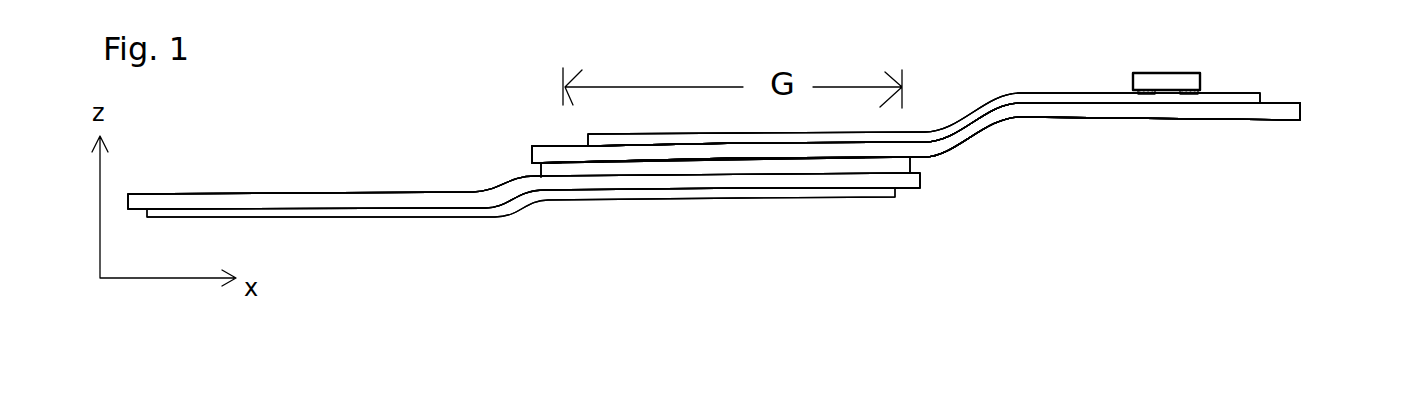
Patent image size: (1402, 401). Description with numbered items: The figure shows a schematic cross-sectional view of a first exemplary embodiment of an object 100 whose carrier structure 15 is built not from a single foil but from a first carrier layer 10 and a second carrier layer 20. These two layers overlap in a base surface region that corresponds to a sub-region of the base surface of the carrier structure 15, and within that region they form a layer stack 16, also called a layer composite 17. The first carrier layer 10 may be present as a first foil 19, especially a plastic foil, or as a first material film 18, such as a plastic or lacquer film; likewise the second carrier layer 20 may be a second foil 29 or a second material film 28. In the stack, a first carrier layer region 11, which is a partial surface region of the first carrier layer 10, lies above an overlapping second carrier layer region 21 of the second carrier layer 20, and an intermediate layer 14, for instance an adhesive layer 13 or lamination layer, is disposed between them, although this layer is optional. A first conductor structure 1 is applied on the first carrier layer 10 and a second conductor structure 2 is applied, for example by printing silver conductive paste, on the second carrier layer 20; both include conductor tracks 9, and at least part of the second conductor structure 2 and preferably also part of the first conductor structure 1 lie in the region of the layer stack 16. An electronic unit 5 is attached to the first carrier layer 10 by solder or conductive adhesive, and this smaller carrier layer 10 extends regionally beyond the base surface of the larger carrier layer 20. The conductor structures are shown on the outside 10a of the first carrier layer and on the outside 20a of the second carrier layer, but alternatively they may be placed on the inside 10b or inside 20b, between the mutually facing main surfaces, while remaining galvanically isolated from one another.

The object 100 is at (390, 100).
The first conductor structure 1 is at (1022, 93).
The second conductor structure 2 is at (497, 208).
The conductor track 9 is at (703, 163).
The electronic unit 5 is at (1190, 82).
The first carrier layer 10 is at (1170, 112).
The outside 10a is at (1287, 103).
The inside 10b is at (1273, 121).
The first carrier layer region 11 is at (847, 157).
The adhesive layer 13 is at (883, 167).
The intermediate layer 14 is at (765, 205).
The carrier structure 15 is at (944, 140).
The layer stack 16 is at (916, 143).
The layer composite 17 is at (916, 143).
The first material film 18 is at (916, 159).
The first foil 19 is at (916, 159).
The second carrier layer 20 is at (320, 198).
The outside 20a is at (141, 211).
The inside 20b is at (145, 195).
The second carrier layer region 21 is at (843, 182).
The second material film 28 is at (524, 235).
The second foil 29 is at (524, 235).